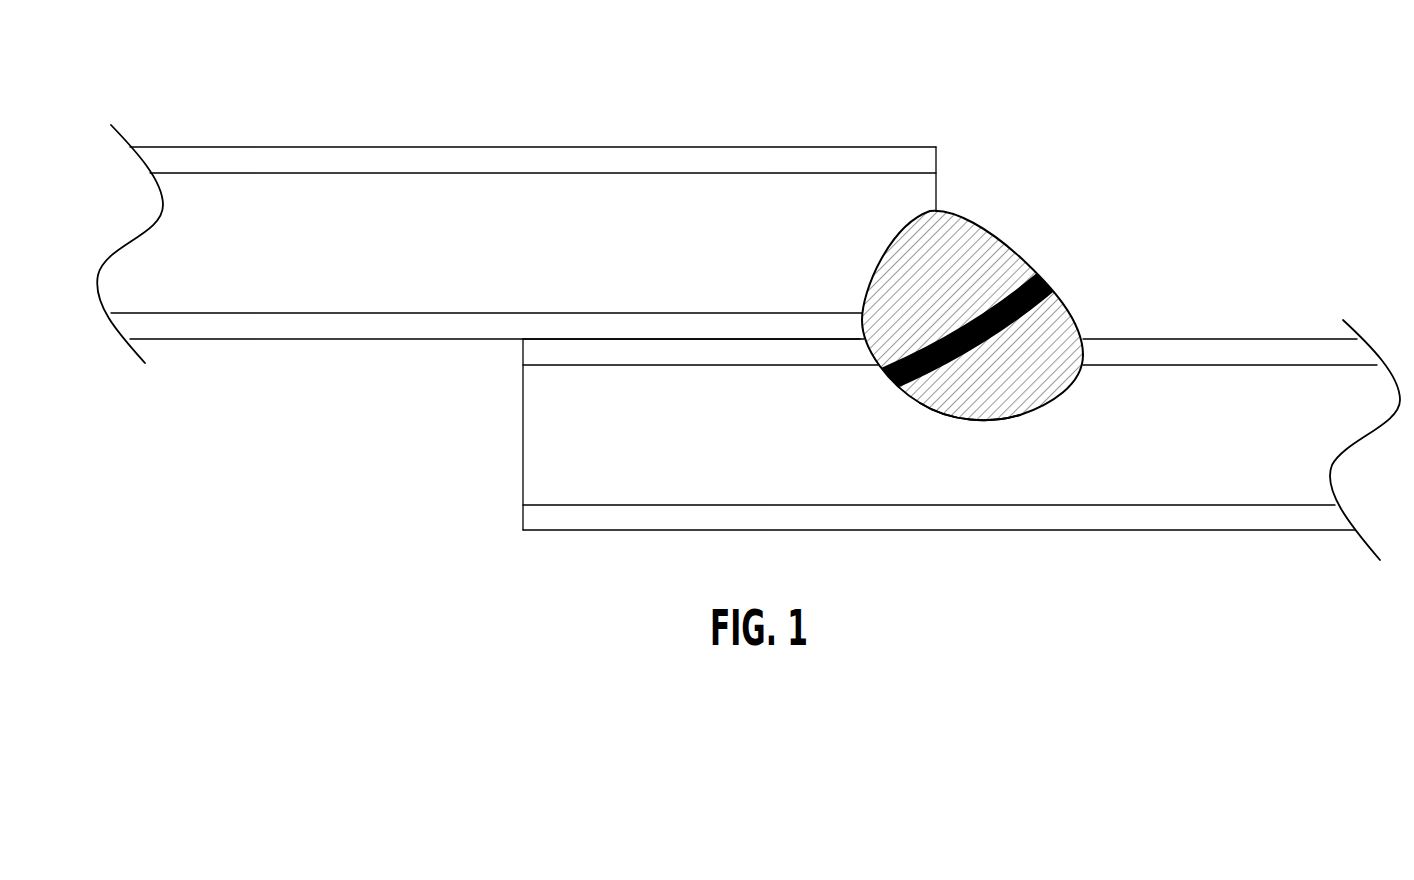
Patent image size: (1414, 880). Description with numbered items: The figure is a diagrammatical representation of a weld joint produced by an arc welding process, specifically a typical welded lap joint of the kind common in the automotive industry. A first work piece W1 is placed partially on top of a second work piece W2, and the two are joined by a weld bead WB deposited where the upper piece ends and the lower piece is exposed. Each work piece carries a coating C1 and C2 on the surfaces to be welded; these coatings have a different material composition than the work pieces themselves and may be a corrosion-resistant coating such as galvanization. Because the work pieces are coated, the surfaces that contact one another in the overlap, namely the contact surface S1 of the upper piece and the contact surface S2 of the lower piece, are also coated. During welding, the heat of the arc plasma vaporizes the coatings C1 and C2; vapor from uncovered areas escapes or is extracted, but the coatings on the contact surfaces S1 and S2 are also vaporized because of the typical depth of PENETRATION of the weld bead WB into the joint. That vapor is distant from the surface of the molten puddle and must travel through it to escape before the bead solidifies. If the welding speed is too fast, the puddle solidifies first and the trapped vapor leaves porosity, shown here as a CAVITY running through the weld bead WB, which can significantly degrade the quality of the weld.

The first work piece W1 is at (399, 215).
The coating C1 is at (722, 147).
The contact surface S1 is at (749, 339).
The second work piece W2 is at (1210, 472).
The coating C2 is at (1214, 339).
The contact surface S2 is at (635, 339).
The weld bead WB is at (983, 228).
The cavity CAVITY is at (1038, 272).
The penetration PENETRATION is at (970, 420).